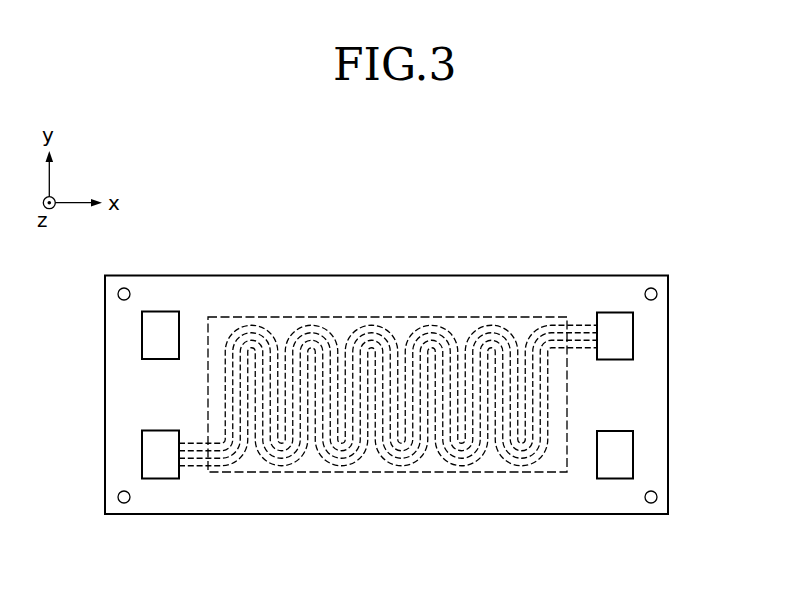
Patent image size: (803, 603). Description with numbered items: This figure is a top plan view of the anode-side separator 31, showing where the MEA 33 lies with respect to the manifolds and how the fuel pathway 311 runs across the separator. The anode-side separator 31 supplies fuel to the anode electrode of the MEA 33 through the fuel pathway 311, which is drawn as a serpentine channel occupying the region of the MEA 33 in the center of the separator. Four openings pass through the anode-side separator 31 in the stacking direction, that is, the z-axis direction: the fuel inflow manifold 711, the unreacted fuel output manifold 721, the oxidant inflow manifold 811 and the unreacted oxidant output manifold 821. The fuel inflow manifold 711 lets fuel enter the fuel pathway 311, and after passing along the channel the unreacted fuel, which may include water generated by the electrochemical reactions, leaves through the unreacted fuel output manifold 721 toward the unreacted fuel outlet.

The anode-side separator 31 is at (655, 322).
The MEA 33 is at (567, 379).
The fuel pathway 311 is at (413, 340).
The fuel inflow manifold 711 is at (613, 312).
The unreacted fuel output manifold 721 is at (160, 479).
The oxidant inflow manifold 811 is at (160, 311).
The unreacted oxidant output manifold 821 is at (613, 479).